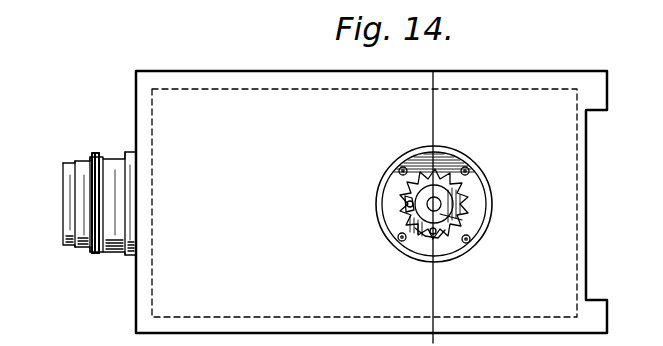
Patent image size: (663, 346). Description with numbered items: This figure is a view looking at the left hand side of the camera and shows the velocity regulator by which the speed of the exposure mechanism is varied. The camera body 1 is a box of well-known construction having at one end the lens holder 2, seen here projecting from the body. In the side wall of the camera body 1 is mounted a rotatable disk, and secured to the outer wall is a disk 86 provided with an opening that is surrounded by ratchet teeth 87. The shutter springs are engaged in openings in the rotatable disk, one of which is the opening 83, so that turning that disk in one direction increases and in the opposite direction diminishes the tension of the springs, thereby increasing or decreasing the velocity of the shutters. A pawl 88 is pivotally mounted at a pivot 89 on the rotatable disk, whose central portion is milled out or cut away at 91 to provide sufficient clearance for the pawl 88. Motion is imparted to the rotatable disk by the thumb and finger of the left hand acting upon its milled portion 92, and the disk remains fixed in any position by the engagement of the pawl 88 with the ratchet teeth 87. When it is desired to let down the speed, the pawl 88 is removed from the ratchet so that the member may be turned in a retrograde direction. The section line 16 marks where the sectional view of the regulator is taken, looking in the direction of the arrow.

The camera body 1 is at (371, 202).
The lens holder 2 is at (101, 152).
The section line 16 is at (365, 62).
The opening 83 is at (460, 218).
The disk 86 is at (467, 154).
The ratchet teeth 87 is at (436, 235).
The pawl 88 is at (405, 185).
The pivot 89 is at (402, 208).
The cut-away portion 91 is at (415, 232).
The milled portion 92 is at (447, 200).